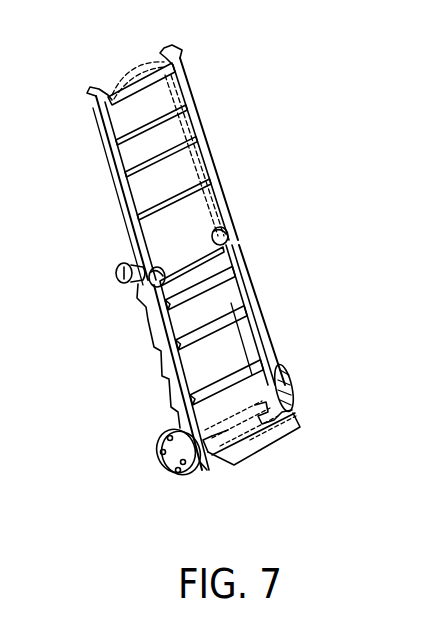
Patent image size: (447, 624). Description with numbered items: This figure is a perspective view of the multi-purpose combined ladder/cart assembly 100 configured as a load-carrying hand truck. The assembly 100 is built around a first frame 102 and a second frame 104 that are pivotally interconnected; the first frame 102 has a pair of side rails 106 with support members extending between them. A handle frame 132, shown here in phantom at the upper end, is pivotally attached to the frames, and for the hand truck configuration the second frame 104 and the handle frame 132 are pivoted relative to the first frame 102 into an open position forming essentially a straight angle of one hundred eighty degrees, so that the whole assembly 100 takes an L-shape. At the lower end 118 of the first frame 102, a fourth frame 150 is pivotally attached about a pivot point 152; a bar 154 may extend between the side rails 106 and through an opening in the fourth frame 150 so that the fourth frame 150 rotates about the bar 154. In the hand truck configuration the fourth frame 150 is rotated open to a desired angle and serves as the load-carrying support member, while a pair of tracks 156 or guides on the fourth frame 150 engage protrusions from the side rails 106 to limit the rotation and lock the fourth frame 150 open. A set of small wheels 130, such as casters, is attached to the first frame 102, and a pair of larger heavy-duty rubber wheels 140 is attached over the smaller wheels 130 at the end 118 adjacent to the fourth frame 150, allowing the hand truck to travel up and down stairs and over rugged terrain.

The multi-purpose combined ladder/cart assembly 100 is at (286, 86).
The first frame 102 is at (262, 299).
The second frame 104 is at (108, 140).
The side rails 106 is at (170, 390).
The end of the first frame 118 is at (205, 468).
The wheels 130 is at (116, 274).
The handle frame 132 is at (135, 63).
The larger wheels 140 is at (157, 462).
The fourth frame 150 is at (292, 432).
The pivot point 152 is at (290, 410).
The bar 154 is at (228, 448).
The tracks 156 is at (289, 386).